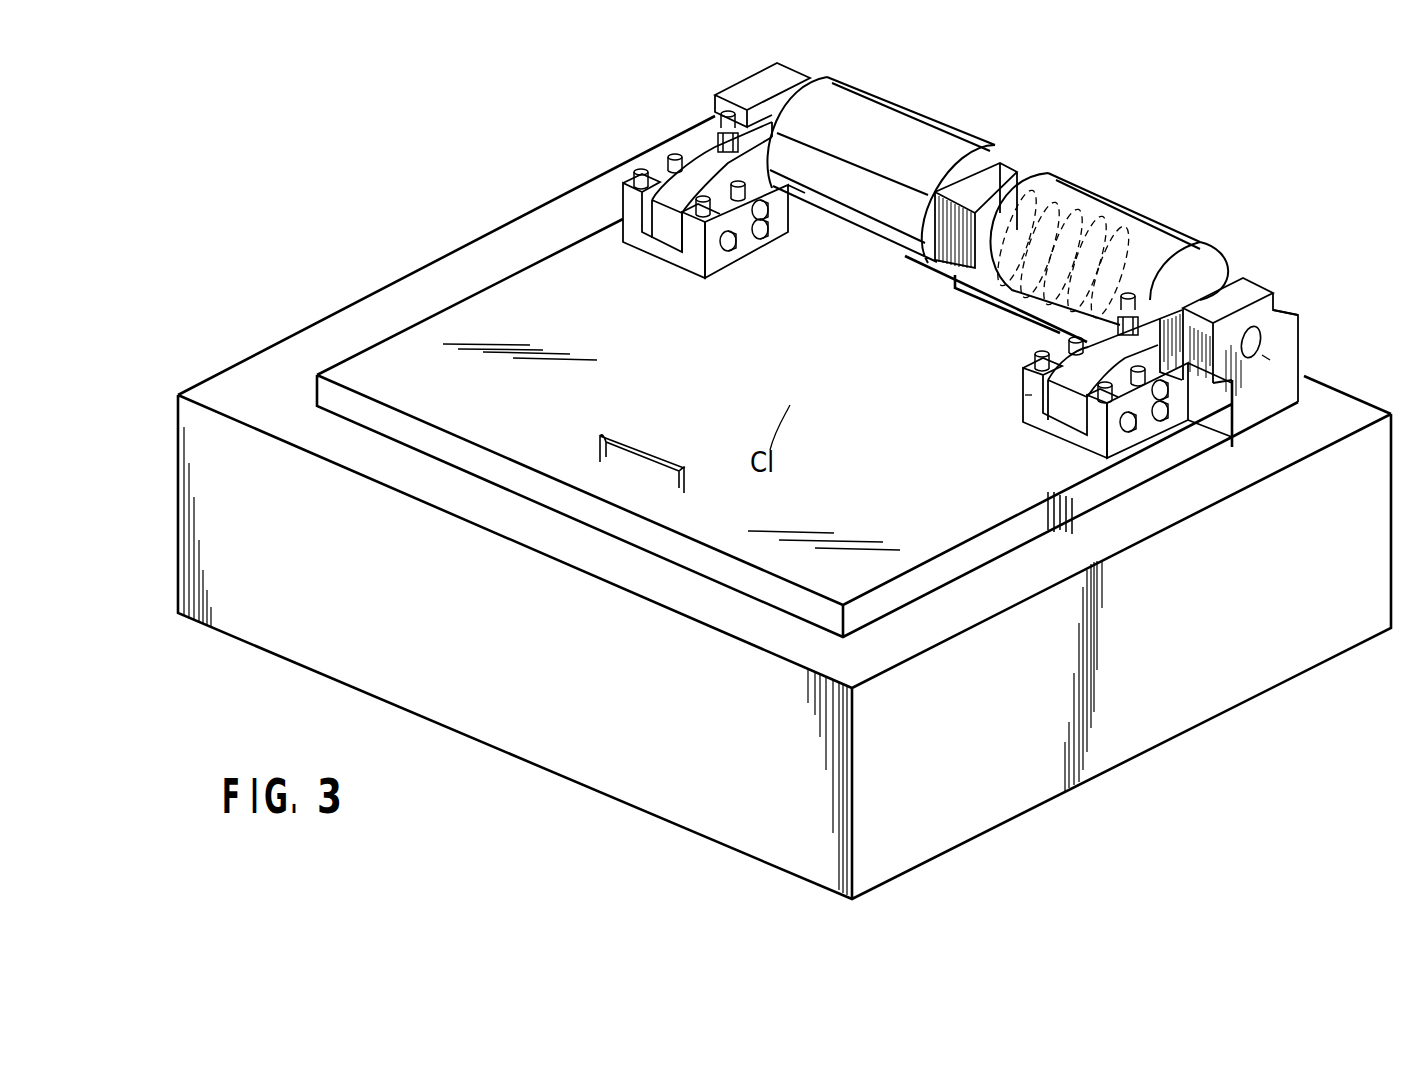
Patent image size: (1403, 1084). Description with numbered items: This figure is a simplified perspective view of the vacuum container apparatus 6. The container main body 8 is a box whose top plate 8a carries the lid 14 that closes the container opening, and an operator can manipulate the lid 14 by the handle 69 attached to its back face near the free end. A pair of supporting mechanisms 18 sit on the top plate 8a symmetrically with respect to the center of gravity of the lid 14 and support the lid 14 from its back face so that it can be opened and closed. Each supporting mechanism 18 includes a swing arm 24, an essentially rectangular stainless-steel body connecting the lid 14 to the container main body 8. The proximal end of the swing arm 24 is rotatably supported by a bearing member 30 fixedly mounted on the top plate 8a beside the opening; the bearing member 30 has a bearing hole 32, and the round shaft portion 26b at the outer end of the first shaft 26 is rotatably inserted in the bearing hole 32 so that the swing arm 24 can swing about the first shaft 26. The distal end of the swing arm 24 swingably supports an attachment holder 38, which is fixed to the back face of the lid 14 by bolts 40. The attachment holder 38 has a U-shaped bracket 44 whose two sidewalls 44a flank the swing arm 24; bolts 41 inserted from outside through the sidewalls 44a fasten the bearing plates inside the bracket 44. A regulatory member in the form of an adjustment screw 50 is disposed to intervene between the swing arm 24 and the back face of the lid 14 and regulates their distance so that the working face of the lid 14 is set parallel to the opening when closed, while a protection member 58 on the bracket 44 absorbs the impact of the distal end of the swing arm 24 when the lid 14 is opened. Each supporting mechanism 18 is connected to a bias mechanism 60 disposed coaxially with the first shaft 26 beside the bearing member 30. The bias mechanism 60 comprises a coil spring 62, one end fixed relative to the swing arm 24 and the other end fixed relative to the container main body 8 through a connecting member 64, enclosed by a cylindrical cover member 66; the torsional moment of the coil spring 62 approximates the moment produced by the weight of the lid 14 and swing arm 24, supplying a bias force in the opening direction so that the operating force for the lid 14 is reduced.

The processing apparatus 6 is at (487, 697).
The container main body 8 is at (580, 752).
The top plate 8a is at (448, 280).
The lid 14 is at (552, 287).
The supporting mechanism 18 is at (805, 67).
The swing arm 24 is at (692, 162).
The first shaft 26 is at (1262, 346).
The round shaft portion 26b is at (1292, 312).
The bearing member 30 is at (770, 75).
The bearing hole 32 is at (1268, 360).
The attachment holder 38 is at (652, 157).
The bolt 40 is at (650, 160).
The bolt 41 is at (776, 215).
The U-shaped bracket 44 is at (735, 258).
The sidewall 44a is at (1030, 395).
The regulatory member 50 is at (722, 110).
The protection member 58 is at (655, 257).
The bias mechanism 60 is at (945, 108).
The coil spring 62 is at (1138, 222).
The connecting member 64 is at (1003, 172).
The cylindrical cover member 66 is at (887, 112).
The handle 69 is at (648, 440).